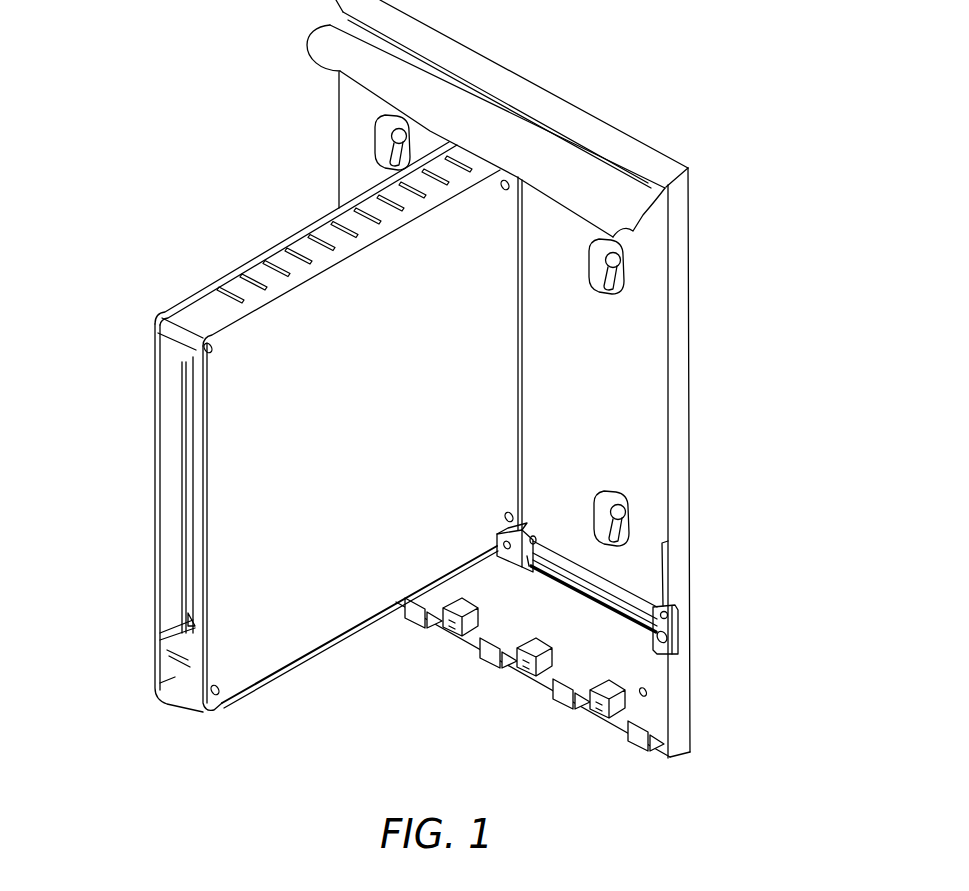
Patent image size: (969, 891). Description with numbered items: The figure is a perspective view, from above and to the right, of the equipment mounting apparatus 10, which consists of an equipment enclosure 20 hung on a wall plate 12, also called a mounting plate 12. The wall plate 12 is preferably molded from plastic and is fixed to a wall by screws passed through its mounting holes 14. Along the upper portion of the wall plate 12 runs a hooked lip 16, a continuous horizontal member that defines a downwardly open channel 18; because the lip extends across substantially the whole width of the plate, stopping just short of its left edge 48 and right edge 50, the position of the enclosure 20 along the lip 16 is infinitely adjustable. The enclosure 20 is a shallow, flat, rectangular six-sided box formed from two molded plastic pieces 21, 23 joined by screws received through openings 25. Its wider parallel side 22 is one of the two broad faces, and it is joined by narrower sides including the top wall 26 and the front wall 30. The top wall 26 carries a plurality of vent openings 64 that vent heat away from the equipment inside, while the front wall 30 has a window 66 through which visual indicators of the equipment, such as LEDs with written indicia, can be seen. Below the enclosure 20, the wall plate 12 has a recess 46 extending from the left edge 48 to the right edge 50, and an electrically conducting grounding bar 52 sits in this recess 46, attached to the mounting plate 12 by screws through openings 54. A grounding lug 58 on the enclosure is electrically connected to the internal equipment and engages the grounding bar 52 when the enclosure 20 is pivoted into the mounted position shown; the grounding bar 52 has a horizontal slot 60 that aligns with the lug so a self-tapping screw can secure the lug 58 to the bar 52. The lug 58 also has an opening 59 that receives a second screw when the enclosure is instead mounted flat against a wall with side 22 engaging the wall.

The equipment mounting apparatus 10 is at (723, 64).
The wall plate 12 is at (657, 330).
The mounting holes 14 is at (405, 143).
The hooked lip 16 is at (598, 192).
The downwardly open channel 18 is at (648, 216).
The equipment enclosure 20 is at (277, 637).
The molded plastic piece 21 is at (157, 597).
The wider side 22 is at (320, 524).
The molded plastic piece 23 is at (360, 627).
The openings 25 is at (509, 182).
The top wall 26 is at (200, 308).
The front wall 30 is at (177, 675).
The recess 46 is at (678, 637).
The left edge 48 is at (338, 116).
The right edge 50 is at (677, 277).
The grounding bar 52 is at (600, 578).
The openings 54 is at (664, 648).
The grounding lug 58 is at (533, 536).
The opening 59 is at (526, 580).
The horizontal slot 60 is at (630, 590).
The vent openings 64 is at (318, 240).
The window 66 is at (173, 450).